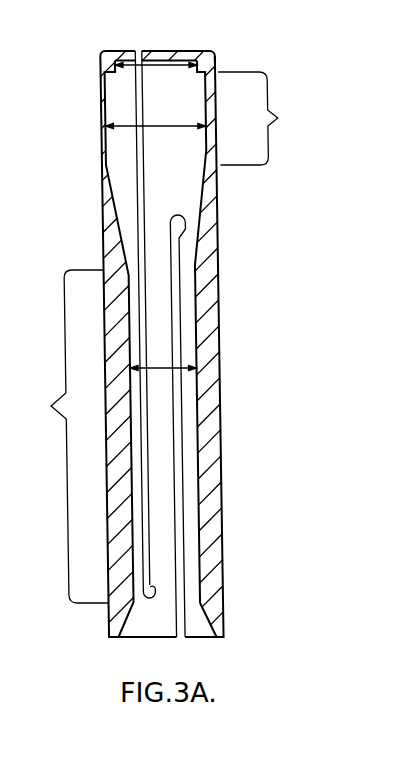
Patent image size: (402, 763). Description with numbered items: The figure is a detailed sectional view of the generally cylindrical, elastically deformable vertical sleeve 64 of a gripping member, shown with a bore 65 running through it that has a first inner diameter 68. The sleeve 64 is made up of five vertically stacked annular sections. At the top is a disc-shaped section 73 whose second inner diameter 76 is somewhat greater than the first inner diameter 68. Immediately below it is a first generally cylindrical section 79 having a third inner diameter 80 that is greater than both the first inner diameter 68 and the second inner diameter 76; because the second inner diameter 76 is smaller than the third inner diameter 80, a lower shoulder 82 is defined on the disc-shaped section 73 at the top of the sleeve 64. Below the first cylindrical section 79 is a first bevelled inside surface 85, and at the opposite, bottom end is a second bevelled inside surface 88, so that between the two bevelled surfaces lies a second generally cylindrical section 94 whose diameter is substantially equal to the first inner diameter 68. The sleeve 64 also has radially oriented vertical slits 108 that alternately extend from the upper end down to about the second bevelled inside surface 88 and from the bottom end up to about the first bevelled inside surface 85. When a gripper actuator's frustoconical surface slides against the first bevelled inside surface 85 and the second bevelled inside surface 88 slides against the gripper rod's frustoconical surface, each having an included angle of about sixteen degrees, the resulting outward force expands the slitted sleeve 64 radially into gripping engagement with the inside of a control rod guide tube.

The elastically deformable vertical sleeve 64 is at (91, 201).
The bore 65 is at (127, 51).
The first inner diameter 68 is at (157, 366).
The top disc-shaped section 73 is at (214, 51).
The second inner diameter 76 is at (162, 60).
The first generally cylindrical section 79 is at (261, 118).
The third inner diameter 80 is at (186, 128).
The lower shoulder 82 is at (112, 77).
The first bevelled inside surface 85 is at (196, 206).
The second bevelled inside surface 88 is at (197, 617).
The second generally cylindrical section 94 is at (63, 436).
The radially oriented vertical slits 108 is at (173, 485).